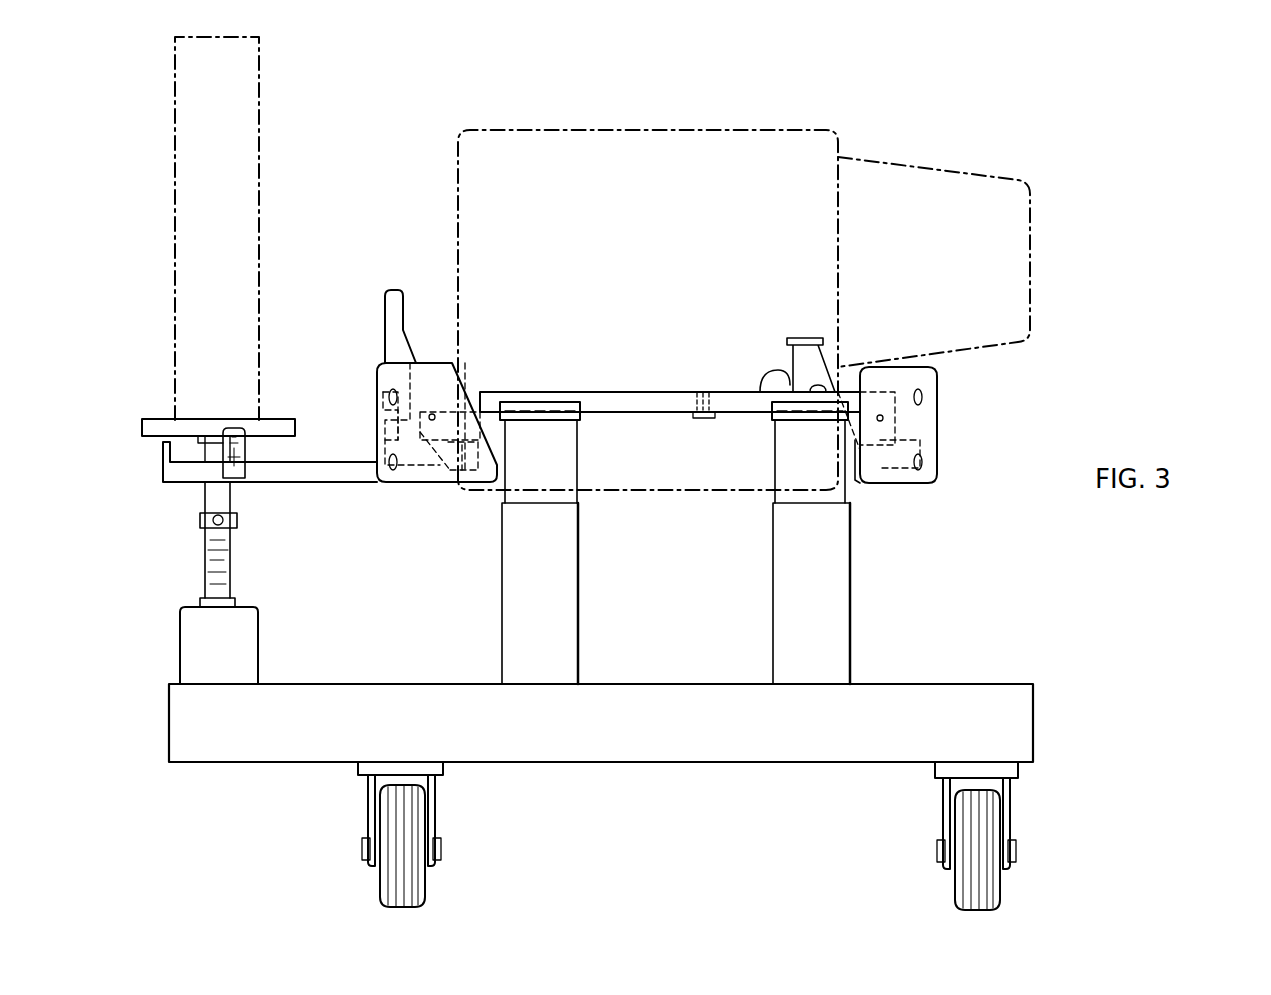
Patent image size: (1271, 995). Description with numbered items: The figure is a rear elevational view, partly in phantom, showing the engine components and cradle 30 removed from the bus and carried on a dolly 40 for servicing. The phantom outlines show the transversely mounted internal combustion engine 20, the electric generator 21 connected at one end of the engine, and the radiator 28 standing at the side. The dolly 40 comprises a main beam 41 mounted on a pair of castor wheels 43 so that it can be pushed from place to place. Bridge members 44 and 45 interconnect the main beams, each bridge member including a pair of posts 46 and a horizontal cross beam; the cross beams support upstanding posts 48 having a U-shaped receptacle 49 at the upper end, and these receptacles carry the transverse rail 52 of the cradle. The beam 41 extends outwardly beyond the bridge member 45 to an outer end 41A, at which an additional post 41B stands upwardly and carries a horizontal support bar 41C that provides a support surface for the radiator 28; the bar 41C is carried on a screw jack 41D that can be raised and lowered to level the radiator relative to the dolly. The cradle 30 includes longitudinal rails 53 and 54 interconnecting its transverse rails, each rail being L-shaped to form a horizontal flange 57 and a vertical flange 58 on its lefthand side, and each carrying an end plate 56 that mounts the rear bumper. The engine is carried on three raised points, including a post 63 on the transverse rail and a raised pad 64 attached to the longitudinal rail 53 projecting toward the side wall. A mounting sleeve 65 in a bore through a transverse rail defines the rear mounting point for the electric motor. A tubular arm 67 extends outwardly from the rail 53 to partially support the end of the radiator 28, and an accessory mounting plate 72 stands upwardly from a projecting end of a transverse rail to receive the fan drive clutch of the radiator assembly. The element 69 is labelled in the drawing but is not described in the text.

The internal combustion engine 20 is at (664, 232).
The electric generator 21 is at (959, 273).
The radiator 28 is at (229, 198).
The cradle 30 is at (640, 336).
The dolly 40 is at (990, 582).
The main beam 41 is at (955, 682).
The outer end 41A is at (170, 722).
The additional post 41B is at (182, 632).
The horizontal support bar 41C is at (152, 418).
The screw jack 41D is at (198, 521).
The castor wheel 43 is at (376, 818).
The bridge member 44 is at (850, 580).
The bridge member 45 is at (500, 580).
The post 46 is at (565, 580).
The upstanding post 48 is at (578, 462).
The U-shaped receptacle 49 is at (556, 420).
The rail 52 is at (620, 390).
The longitudinal rail 53 is at (478, 480).
The longitudinal rail 54 is at (905, 432).
The end plate 56 is at (376, 375).
The horizontal flange 57 is at (480, 452).
The vertical flange 58 is at (445, 478).
The post 63 is at (800, 334).
The raised pad 64 is at (422, 410).
The mounting sleeve 65 is at (708, 418).
The tubular arm 67 is at (330, 478).
The latch 69 is at (395, 436).
The accessory mounting plate 72 is at (384, 326).